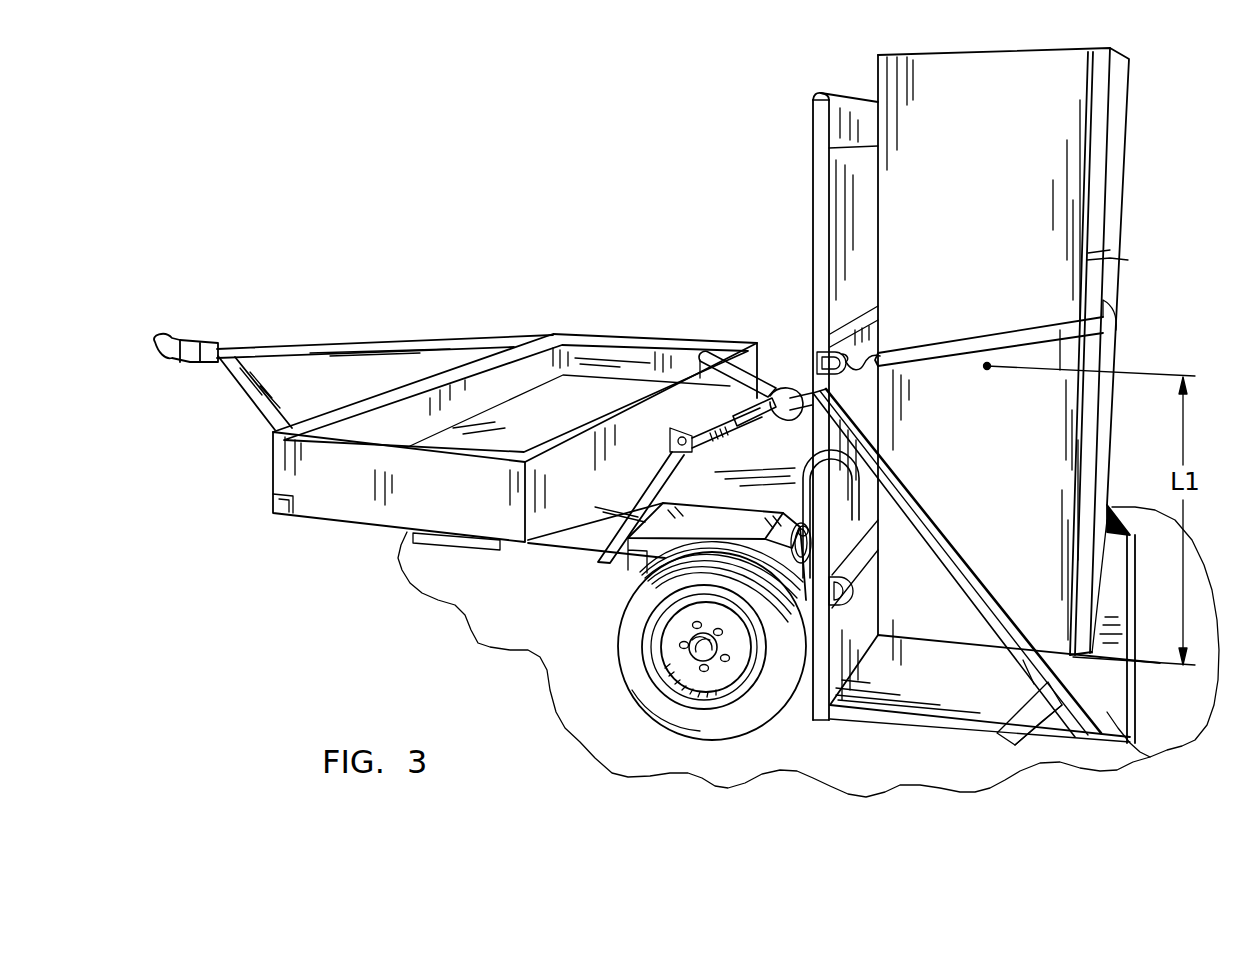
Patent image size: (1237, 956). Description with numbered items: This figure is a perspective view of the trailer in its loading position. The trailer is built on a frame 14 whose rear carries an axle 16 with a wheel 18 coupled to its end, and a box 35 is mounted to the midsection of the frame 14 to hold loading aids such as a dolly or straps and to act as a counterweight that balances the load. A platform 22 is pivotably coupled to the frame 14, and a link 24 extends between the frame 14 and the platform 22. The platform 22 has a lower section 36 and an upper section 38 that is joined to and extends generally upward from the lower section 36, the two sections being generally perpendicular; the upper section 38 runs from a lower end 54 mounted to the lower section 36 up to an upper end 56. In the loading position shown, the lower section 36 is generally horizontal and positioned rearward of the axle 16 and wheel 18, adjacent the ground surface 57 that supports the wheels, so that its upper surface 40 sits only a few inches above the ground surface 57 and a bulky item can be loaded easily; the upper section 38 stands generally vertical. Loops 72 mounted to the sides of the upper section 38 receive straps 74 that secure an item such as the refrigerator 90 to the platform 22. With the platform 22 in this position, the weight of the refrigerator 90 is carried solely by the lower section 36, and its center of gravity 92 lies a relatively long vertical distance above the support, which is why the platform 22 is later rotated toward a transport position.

The frame 14 is at (570, 557).
The axle 16 is at (698, 652).
The wheel 18 is at (666, 708).
The platform 22 is at (936, 727).
The link 24 is at (798, 395).
The box 35 is at (365, 508).
The lower section 36 is at (1163, 757).
The upper section 38 is at (818, 96).
The upper surface 40 is at (978, 675).
The lower end 54 is at (820, 720).
The upper end 56 is at (812, 103).
The ground surface 57 is at (478, 590).
The loop 72 is at (823, 340).
The strap 74 is at (1055, 340).
The refrigerator 90 is at (1006, 176).
The center of gravity 92 is at (987, 368).